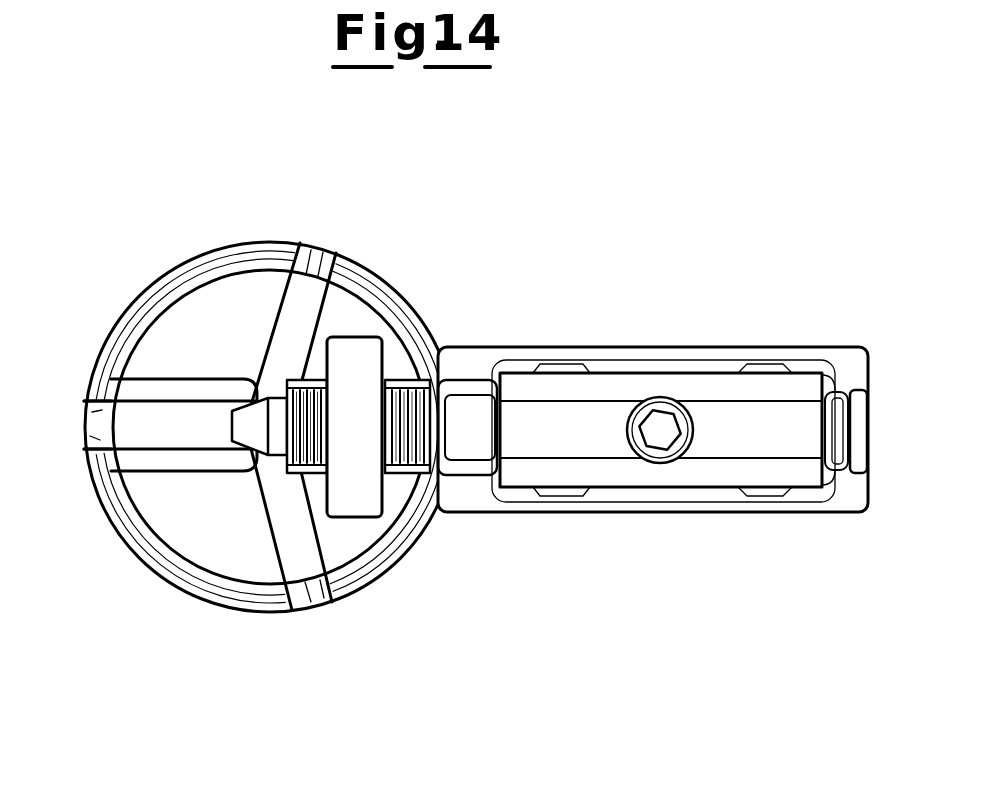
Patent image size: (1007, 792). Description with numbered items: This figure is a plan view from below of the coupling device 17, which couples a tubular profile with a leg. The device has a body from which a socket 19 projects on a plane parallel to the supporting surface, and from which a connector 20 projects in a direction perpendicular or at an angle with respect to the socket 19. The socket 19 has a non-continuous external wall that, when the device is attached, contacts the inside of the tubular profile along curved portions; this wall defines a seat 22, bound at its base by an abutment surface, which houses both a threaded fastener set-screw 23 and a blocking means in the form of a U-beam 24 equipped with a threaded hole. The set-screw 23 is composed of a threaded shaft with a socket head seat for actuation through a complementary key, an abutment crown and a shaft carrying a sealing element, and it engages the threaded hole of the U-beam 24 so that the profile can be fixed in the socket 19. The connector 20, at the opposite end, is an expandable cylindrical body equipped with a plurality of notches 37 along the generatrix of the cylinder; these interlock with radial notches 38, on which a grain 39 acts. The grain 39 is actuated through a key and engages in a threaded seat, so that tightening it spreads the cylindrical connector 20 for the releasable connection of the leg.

The coupling device 17 is at (473, 413).
The socket 19 is at (843, 346).
The connector 20 is at (217, 520).
The seat 22 is at (838, 433).
The threaded fastener set-screw 23 is at (626, 436).
The U-beam 24 is at (717, 388).
The notches 37 is at (318, 268).
The radial notches 38 is at (298, 312).
The grain 39 is at (399, 473).